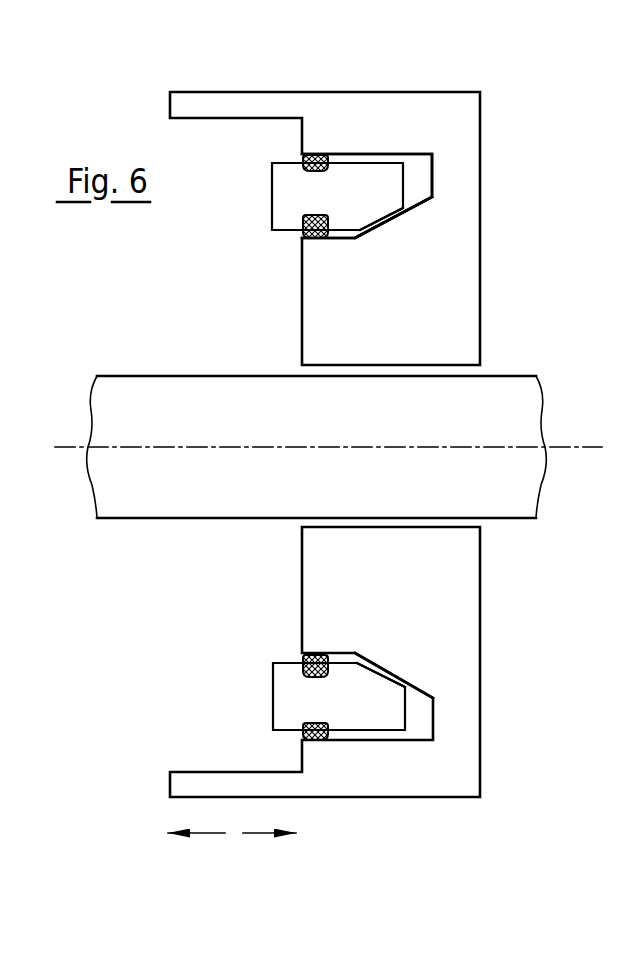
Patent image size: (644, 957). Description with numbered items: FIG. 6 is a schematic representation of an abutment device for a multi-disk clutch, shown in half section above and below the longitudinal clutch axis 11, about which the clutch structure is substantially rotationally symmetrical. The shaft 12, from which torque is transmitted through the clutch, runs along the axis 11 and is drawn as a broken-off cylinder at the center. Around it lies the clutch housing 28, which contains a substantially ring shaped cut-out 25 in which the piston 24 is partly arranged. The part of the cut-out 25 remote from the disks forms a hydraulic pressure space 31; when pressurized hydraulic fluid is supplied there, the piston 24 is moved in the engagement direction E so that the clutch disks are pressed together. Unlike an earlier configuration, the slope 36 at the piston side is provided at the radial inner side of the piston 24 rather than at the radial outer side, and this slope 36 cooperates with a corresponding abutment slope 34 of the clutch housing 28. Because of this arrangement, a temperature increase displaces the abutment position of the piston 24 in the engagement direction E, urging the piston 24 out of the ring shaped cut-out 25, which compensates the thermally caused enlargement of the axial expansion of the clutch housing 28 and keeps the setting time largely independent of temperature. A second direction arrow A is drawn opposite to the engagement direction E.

The longitudinal clutch axis 11 is at (563, 447).
The shaft 12 is at (518, 375).
The piston 24 is at (272, 203).
The ring shaped cut-out 25 is at (421, 723).
The clutch housing 28 is at (423, 91).
The hydraulic pressure space 31 is at (419, 177).
The abutment slope 34 is at (357, 239).
The slope 36 is at (380, 218).
The engagement direction E is at (200, 833).
The direction A is at (258, 833).